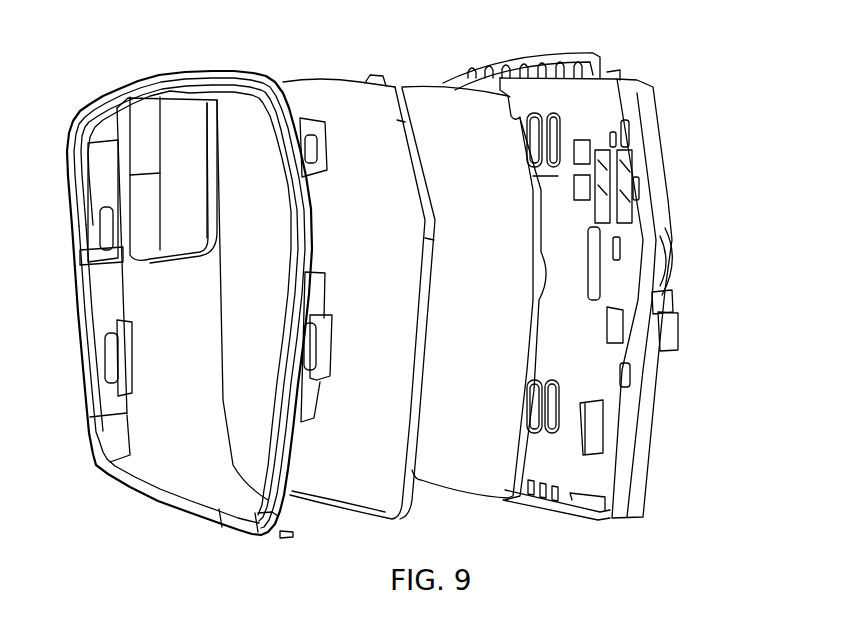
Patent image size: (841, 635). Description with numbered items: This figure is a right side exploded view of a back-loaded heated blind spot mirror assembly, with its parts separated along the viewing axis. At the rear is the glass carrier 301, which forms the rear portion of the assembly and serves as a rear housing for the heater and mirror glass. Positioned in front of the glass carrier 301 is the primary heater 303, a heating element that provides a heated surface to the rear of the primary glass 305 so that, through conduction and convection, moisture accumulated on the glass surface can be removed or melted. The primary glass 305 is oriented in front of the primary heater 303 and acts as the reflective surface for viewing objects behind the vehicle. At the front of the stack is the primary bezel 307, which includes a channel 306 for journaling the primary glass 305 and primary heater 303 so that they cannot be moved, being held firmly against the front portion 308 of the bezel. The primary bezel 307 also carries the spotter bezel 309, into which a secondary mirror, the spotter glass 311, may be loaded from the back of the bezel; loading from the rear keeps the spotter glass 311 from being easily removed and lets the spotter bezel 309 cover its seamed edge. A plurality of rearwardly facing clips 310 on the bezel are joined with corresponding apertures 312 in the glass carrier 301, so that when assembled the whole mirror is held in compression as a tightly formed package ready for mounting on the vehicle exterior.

The glass carrier 301 is at (573, 107).
The primary heater 303 is at (453, 110).
The primary glass 305 is at (337, 102).
The channel 306 is at (115, 430).
The primary bezel 307 is at (238, 527).
The front portion of the bezel 308 is at (157, 497).
The spotter bezel 309 is at (143, 117).
The rearwardly facing clips 310 is at (123, 337).
The spotter glass 311 is at (187, 127).
The apertures 312 is at (675, 270).